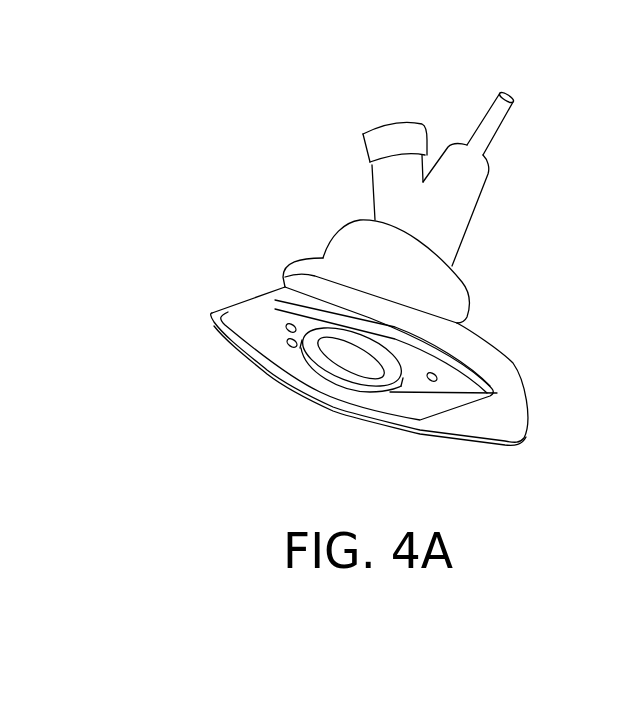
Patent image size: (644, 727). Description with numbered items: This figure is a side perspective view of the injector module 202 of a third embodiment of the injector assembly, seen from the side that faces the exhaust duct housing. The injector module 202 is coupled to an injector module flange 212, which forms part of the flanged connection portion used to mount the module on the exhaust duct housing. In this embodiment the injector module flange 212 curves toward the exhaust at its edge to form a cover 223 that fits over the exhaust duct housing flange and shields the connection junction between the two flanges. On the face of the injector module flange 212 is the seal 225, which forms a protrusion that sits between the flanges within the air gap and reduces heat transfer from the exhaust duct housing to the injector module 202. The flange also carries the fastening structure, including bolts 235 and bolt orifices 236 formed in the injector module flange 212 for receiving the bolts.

The injector module 202 is at (512, 61).
The injector module flange 212 is at (480, 335).
The cover 223 is at (512, 383).
The seal 225 is at (385, 378).
The bolts 235 is at (286, 327).
The bolt orifices 236 is at (290, 347).